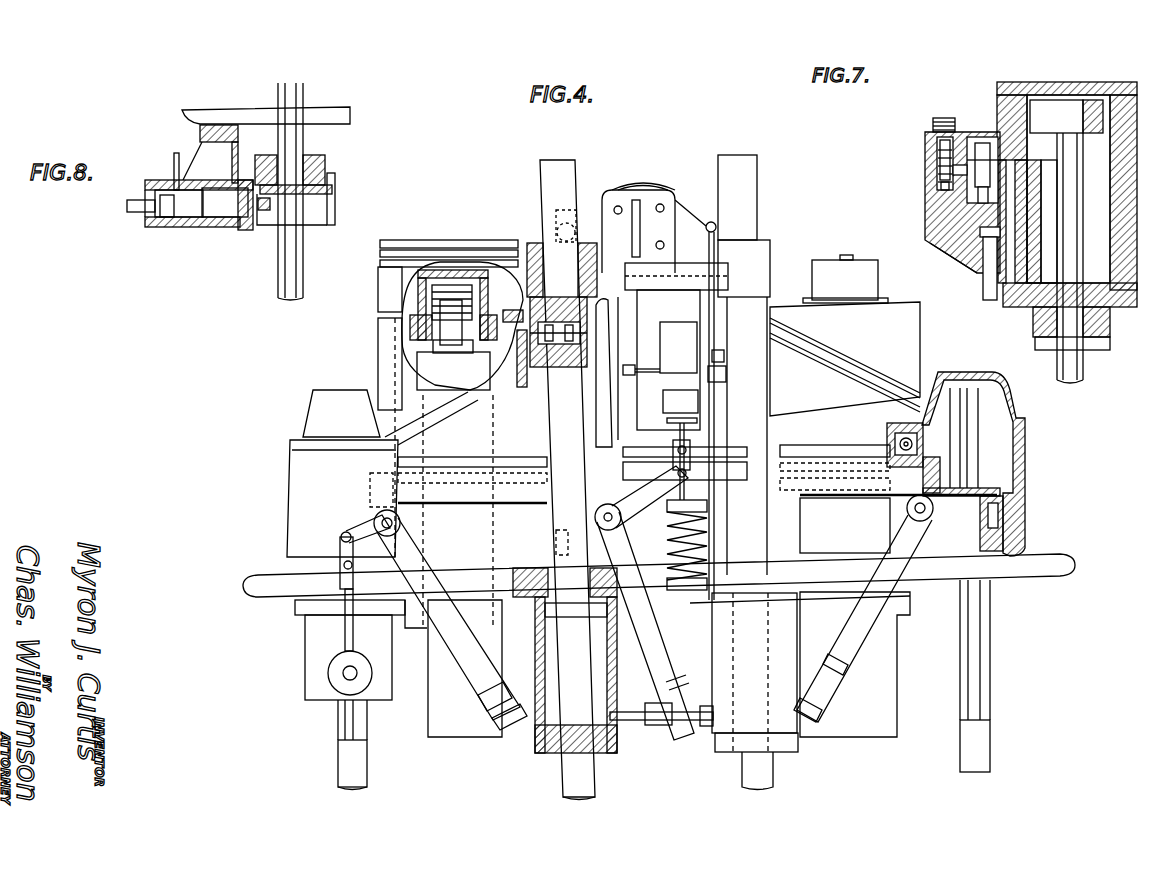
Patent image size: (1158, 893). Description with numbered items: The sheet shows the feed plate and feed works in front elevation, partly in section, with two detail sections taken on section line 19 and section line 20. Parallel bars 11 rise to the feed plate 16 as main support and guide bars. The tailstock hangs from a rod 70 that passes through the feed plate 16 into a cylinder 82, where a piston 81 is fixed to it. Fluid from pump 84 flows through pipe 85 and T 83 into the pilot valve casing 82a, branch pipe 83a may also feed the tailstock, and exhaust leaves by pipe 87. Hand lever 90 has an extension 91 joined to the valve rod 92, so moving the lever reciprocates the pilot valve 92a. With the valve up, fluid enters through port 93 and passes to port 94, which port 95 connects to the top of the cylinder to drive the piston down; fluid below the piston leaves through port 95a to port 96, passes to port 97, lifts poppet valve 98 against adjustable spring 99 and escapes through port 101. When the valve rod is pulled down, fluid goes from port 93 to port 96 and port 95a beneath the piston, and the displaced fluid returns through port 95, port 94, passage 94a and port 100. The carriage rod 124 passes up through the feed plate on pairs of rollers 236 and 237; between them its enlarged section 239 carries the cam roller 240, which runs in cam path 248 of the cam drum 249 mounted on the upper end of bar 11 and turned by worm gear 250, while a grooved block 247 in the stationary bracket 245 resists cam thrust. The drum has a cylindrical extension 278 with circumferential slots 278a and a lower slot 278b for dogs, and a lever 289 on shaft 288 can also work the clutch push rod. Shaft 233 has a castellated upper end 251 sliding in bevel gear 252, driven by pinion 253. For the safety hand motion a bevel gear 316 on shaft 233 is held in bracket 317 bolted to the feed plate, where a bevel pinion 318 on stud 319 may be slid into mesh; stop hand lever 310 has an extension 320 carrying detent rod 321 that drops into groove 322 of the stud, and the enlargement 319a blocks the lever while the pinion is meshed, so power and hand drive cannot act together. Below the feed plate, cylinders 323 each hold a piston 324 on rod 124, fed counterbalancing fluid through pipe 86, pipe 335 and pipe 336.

In FIG. 4, the posts or bars 11 is at (455, 425).
In FIG. 8, the feed plate 16 is at (208, 110).
In FIG. 4, the feed plate 16 is at (243, 587).
In FIG. 4, the section line 19 is at (673, 272).
In FIG. 4, the section line 20 is at (352, 510).
In FIG. 7, the rod 70 is at (1085, 378).
In FIG. 4, the rod 70 is at (708, 540).
In FIG. 7, the piston 81 is at (1066, 116).
In FIG. 7, the cylinder 82 is at (1068, 189).
In FIG. 4, the cylinder 82 is at (668, 360).
In FIG. 7, the pilot valve casing 82a is at (922, 200).
In FIG. 4, the pilot valve casing 82a is at (678, 347).
In FIG. 7, the T 83 is at (1038, 221).
In FIG. 4, the T 83 is at (724, 356).
In FIG. 4, the branch pipe 83a is at (726, 375).
In FIG. 4, the pump 84 is at (641, 180).
In FIG. 4, the pipe 85 is at (708, 222).
In FIG. 4, the pipe 86 is at (680, 406).
In FIG. 7, the pipe 87 is at (960, 215).
In FIG. 4, the pipe 87 is at (654, 367).
In FIG. 4, the hand lever 90 is at (688, 740).
In FIG. 4, the extension 91 is at (632, 512).
In FIG. 7, the valve rod 92 is at (985, 296).
In FIG. 4, the valve rod 92 is at (678, 436).
In FIG. 7, the pilot valve 92a is at (950, 240).
In FIG. 7, the port 93 is at (1046, 221).
In FIG. 7, the port 94 is at (982, 142).
In FIG. 7, the passage 94a is at (958, 118).
In FIG. 7, the port 95 is at (1010, 93).
In FIG. 7, the port 95a is at (1008, 305).
In FIG. 7, the port 96 is at (955, 265).
In FIG. 7, the port 97 is at (1046, 208).
In FIG. 7, the poppet valve 98 is at (940, 190).
In FIG. 7, the adjustable spring 99 is at (936, 158).
In FIG. 7, the port 100 is at (937, 170).
In FIG. 7, the port 101 is at (955, 190).
In FIG. 4, the rod 124 is at (560, 792).
In FIG. 8, the shaft 233 is at (278, 294).
In FIG. 4, the shaft 233 is at (362, 778).
In FIG. 4, the rollers 236 is at (570, 552).
In FIG. 4, the rollers 237 is at (570, 250).
In FIG. 4, the enlarged section 239 is at (558, 347).
In FIG. 4, the cam roller 240 is at (462, 326).
In FIG. 4, the supporting bracket 245 is at (661, 407).
In FIG. 4, the block 247 is at (595, 428).
In FIG. 4, the cam path 248 is at (858, 398).
In FIG. 4, the cam drum 249 is at (378, 340).
In FIG. 4, the worm gear 250 is at (390, 490).
In FIG. 4, the castellated upper end 251 is at (340, 725).
In FIG. 4, the bevel gear 252 is at (1000, 490).
In FIG. 4, the pinion 253 is at (970, 472).
In FIG. 4, the cylindrical extension 278 is at (378, 277).
In FIG. 4, the circumferential slots 278a is at (380, 248).
In FIG. 4, the lower slot 278b is at (378, 307).
In FIG. 4, the shaft 288 is at (907, 511).
In FIG. 4, the lever 289 is at (858, 632).
In FIG. 4, the hand lever 310 is at (470, 680).
In FIG. 8, the bevel gear 316 is at (330, 203).
In FIG. 8, the bracket 317 is at (330, 189).
In FIG. 4, the bracket 317 is at (305, 665).
In FIG. 8, the bevel pinion 318 is at (265, 215).
In FIG. 8, the stud 319 is at (204, 202).
In FIG. 4, the stud 319 is at (340, 682).
In FIG. 8, the enlargement 319a is at (160, 227).
In FIG. 4, the extension 320 is at (353, 525).
In FIG. 8, the detent rod 321 is at (174, 160).
In FIG. 4, the detent rod 321 is at (345, 637).
In FIG. 8, the notch or recess 322 is at (192, 227).
In FIG. 4, the cylinders 323 is at (535, 740).
In FIG. 4, the piston 324 is at (556, 618).
In FIG. 4, the pipe 335 is at (634, 722).
In FIG. 4, the pipe 336 is at (750, 695).